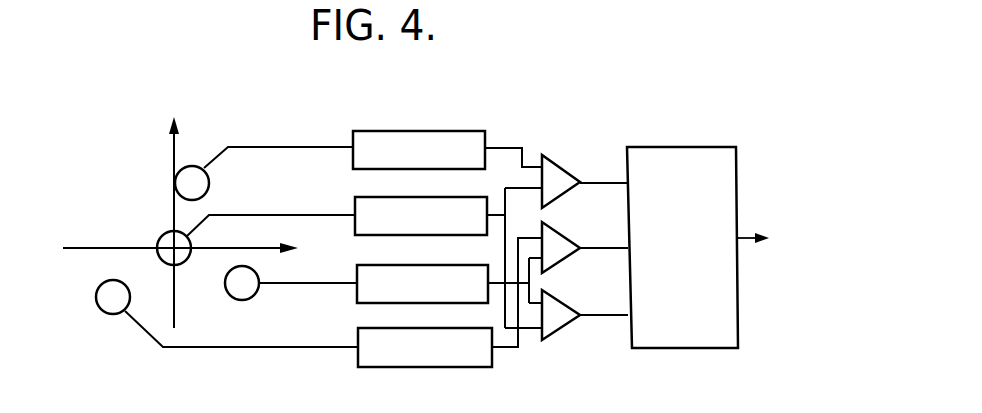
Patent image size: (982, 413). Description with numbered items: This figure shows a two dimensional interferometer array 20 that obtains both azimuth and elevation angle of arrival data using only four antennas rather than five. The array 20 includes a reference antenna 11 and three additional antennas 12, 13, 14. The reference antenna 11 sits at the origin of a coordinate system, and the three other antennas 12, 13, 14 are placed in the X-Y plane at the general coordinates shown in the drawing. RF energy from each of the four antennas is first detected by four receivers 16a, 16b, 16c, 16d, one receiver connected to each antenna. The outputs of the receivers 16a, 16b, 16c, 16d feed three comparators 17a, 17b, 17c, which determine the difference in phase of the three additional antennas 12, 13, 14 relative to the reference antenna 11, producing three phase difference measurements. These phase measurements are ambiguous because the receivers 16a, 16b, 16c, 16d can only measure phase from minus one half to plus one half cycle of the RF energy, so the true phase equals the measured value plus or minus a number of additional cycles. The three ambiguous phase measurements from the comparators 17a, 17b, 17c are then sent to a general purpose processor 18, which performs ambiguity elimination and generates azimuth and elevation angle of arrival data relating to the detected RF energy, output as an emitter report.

The reference antenna 11 is at (163, 237).
The additional antenna 12 is at (192, 166).
The additional antenna 13 is at (105, 313).
The additional antenna 14 is at (233, 299).
The receiver 16a is at (352, 128).
The receiver 16b is at (355, 197).
The receiver 16c is at (357, 276).
The receiver 16d is at (355, 364).
The comparator 17a is at (563, 158).
The comparator 17b is at (566, 233).
The comparator 17c is at (555, 336).
The general purpose processor 18 is at (736, 147).
The two dimensional interferometer array 20 is at (786, 102).